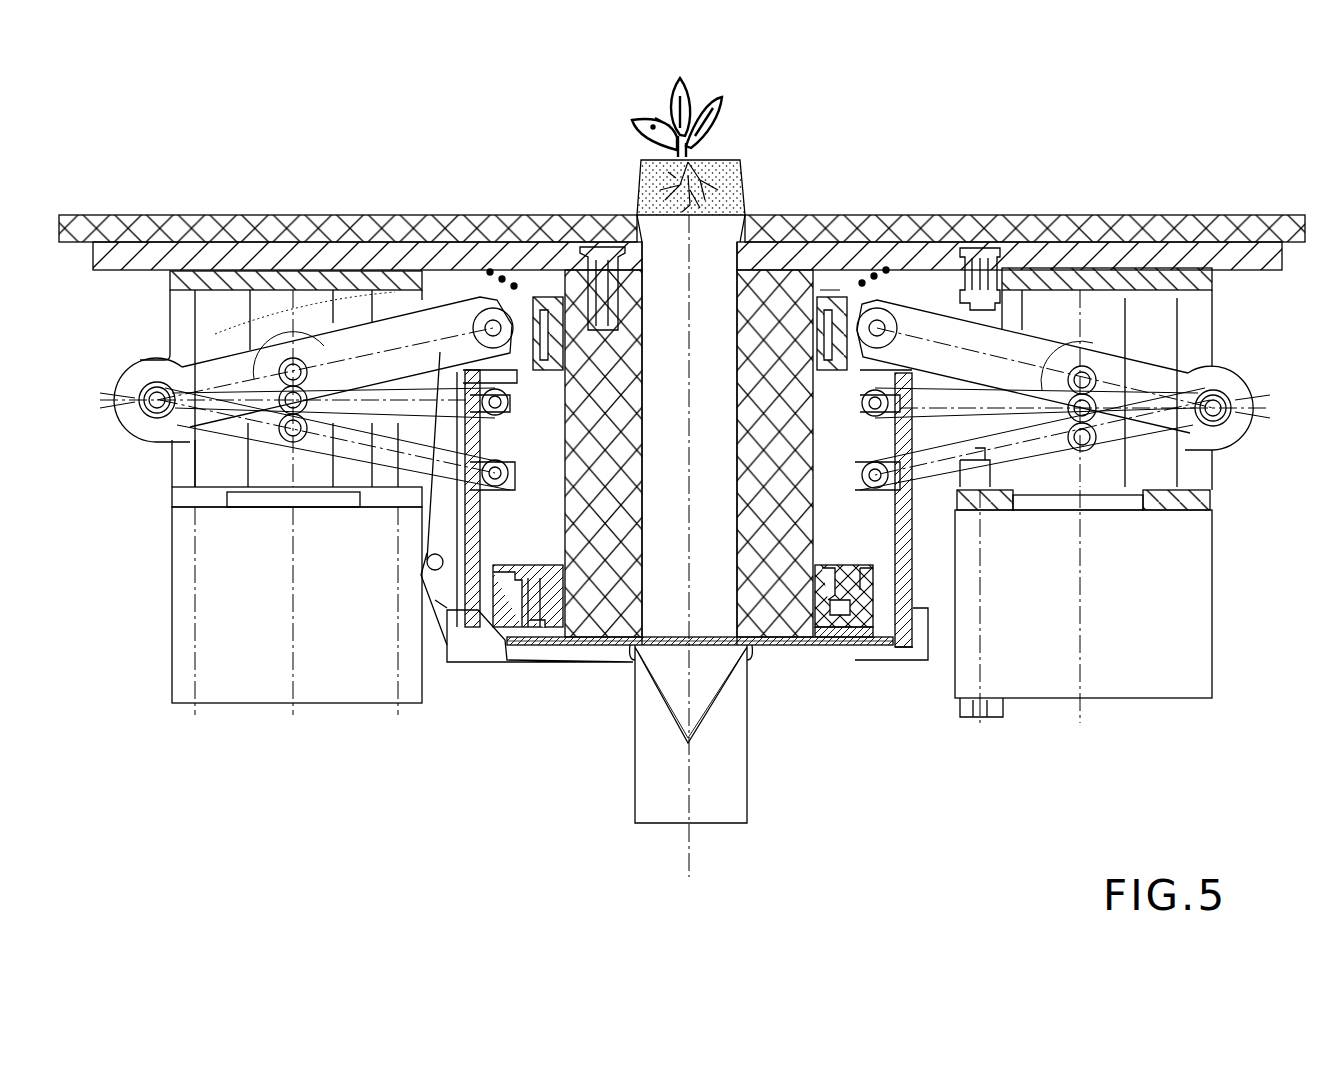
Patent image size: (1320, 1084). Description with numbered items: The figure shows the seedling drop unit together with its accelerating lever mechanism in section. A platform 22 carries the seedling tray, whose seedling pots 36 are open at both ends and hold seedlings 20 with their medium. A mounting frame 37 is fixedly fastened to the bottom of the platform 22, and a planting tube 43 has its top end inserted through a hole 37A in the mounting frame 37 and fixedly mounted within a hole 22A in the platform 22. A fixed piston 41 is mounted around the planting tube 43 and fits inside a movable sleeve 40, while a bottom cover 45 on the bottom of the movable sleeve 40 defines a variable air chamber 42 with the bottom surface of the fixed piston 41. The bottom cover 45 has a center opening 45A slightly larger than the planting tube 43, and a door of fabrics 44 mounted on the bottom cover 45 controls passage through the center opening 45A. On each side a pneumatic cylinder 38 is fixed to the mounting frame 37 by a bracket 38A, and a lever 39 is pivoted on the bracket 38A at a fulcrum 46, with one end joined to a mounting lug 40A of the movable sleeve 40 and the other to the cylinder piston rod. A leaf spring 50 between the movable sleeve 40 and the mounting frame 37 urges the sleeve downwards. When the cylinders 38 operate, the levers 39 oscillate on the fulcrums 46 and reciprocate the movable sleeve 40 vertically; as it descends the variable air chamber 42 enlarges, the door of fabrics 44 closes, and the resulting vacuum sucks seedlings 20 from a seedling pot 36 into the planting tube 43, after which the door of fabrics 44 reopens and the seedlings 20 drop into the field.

The seedlings 20 is at (717, 122).
The platform 22 is at (1057, 222).
The hole on the platform 22A is at (627, 215).
The seedling pot 36 is at (743, 178).
The mounting frame 37 is at (1230, 252).
The hole on the mounting frame 37A is at (822, 226).
The pneumatic cylinder 38 is at (372, 622).
The bracket 38A is at (168, 327).
The lever 39 is at (206, 440).
The movable sleeve 40 is at (915, 630).
The mounting lug 40A is at (913, 307).
The fixed piston 41 is at (507, 653).
The variable air chamber 42 is at (828, 647).
The planting tube 43 is at (655, 572).
The door of fabrics 44 is at (672, 790).
The bottom cover 45 is at (843, 645).
The center opening 45A is at (668, 680).
The fulcrum 46 is at (150, 443).
The leaf spring 50 is at (893, 310).